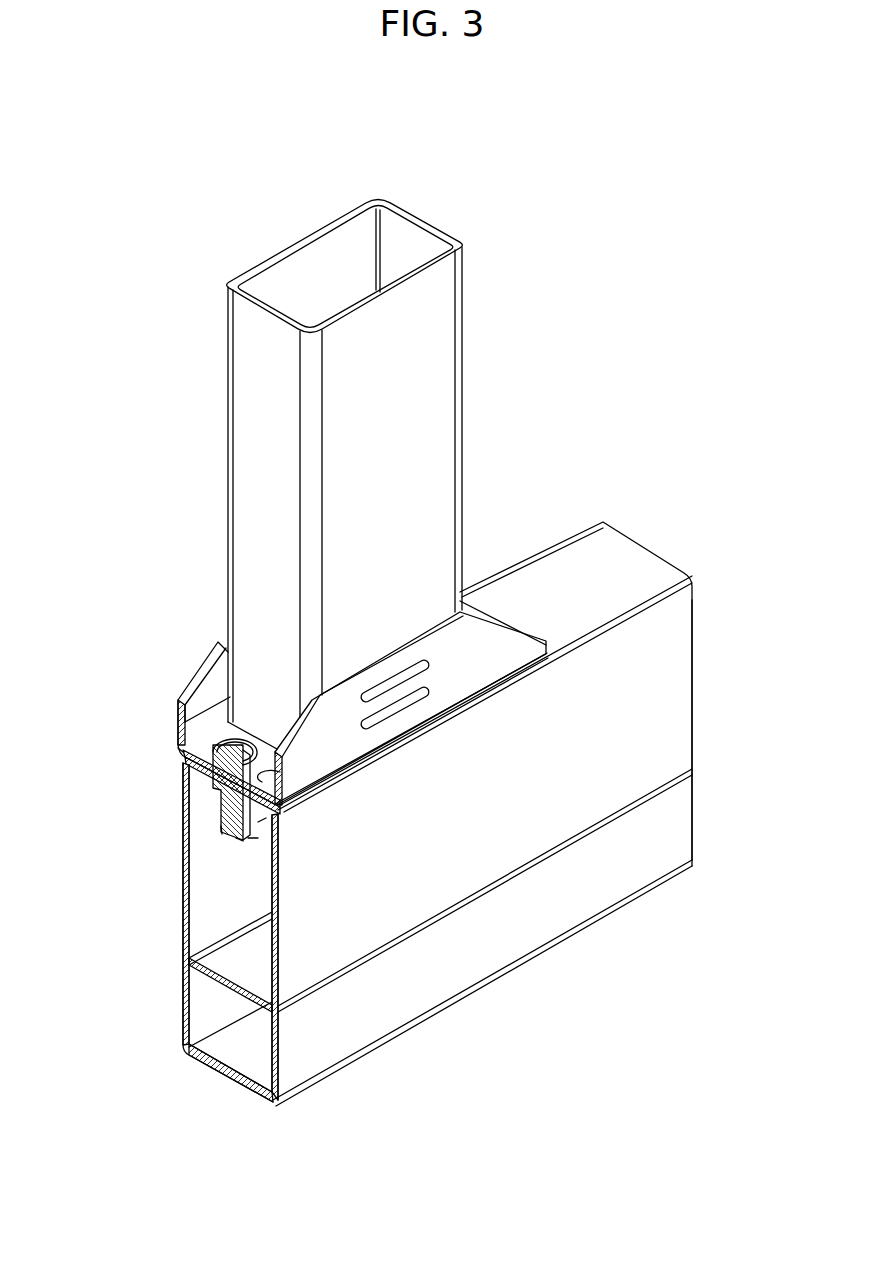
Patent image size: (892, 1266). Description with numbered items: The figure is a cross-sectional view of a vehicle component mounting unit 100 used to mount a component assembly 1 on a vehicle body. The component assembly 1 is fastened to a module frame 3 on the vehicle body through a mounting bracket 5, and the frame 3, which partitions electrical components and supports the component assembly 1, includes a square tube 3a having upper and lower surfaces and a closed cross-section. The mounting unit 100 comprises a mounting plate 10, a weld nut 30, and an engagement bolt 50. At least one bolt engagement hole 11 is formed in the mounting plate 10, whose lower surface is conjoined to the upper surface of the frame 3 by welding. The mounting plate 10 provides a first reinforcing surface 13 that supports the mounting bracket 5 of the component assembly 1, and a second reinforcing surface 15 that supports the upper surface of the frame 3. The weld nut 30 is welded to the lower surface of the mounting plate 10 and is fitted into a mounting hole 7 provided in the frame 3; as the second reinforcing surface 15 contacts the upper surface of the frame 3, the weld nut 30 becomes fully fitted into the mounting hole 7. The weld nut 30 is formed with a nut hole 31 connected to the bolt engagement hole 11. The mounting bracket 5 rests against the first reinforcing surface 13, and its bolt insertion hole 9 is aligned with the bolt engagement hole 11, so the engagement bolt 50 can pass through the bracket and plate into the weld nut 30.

The vehicle component mounting unit 100 is at (321, 159).
The component assembly 1 is at (472, 549).
The module frame 3 is at (704, 657).
The square tube 3a is at (672, 700).
The engagement bolt 50 is at (243, 747).
The mounting bracket 5 is at (206, 744).
The mounting hole 7 is at (213, 801).
The bolt insertion hole 9 is at (188, 767).
The mounting plate 10 is at (179, 752).
The bolt engagement hole 11 is at (219, 830).
The first reinforcing surface 13 is at (270, 784).
The second reinforcing surface 15 is at (262, 822).
The weld nut 30 is at (254, 832).
The nut hole 31 is at (240, 840).